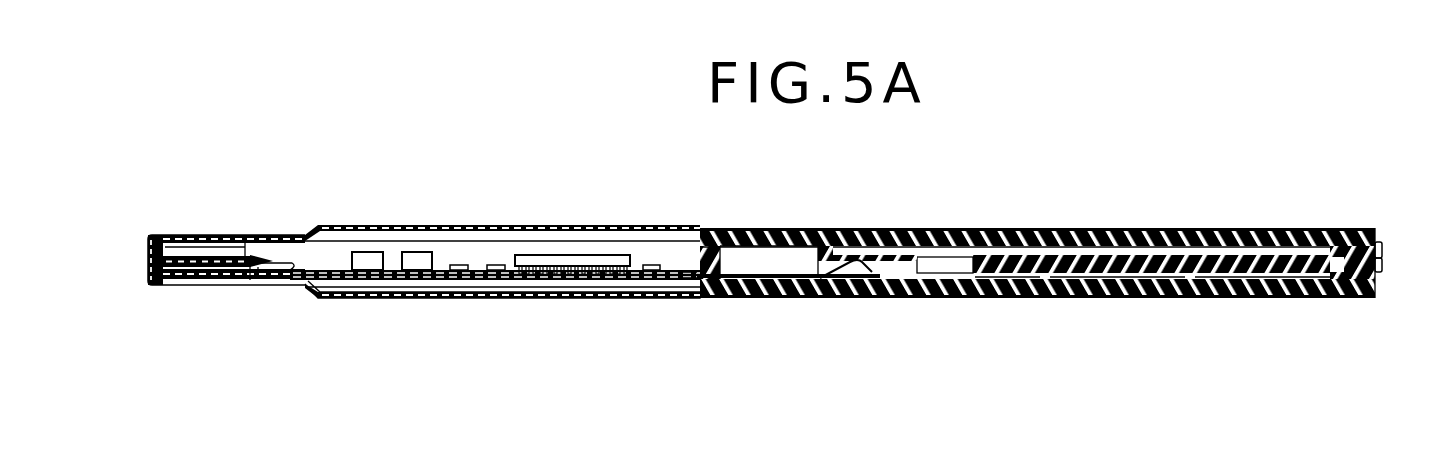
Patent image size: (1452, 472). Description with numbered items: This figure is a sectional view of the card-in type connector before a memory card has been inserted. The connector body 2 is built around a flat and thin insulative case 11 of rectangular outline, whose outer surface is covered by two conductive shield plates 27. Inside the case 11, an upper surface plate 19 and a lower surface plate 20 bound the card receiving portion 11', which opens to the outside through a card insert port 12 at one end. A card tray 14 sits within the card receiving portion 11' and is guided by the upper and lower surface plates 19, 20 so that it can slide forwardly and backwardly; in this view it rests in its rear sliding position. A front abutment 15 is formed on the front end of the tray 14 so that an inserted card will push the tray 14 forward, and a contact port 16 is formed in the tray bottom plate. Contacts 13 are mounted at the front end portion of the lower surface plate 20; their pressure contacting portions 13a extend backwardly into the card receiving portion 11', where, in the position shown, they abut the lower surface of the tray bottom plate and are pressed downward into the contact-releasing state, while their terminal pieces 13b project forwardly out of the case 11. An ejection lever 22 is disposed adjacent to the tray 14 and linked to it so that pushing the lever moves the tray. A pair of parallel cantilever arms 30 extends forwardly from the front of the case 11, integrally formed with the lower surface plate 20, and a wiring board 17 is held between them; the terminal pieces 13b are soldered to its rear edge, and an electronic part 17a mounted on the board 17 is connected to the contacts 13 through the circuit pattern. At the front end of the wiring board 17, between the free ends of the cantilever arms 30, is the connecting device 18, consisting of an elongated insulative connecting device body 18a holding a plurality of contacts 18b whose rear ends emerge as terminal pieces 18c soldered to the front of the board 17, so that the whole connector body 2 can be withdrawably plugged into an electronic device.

The connecting device 18 is at (195, 284).
The insulative connecting device body 18a is at (200, 238).
The contacts 18b is at (210, 259).
The terminal pieces 18c is at (274, 262).
The cantilever arms 30 is at (480, 252).
The wiring board 17 is at (538, 283).
The electronic part 17a is at (570, 257).
The contacts 13 is at (800, 275).
The pressure contacting portions 13a is at (855, 278).
The terminal pieces 13b is at (690, 272).
The front abutment 15 is at (833, 230).
The contact port 16 is at (940, 258).
The shield plates 27 is at (1030, 230).
The upper surface plate 19 is at (1113, 230).
The card receiving portion 11' is at (1151, 220).
The connector body 2 is at (1265, 230).
The ejection lever 22 is at (1382, 246).
The card insert port 12 is at (1382, 266).
The lower surface plate 20 is at (960, 298).
The card tray 14 is at (1157, 290).
The insulative case 11 is at (1302, 295).